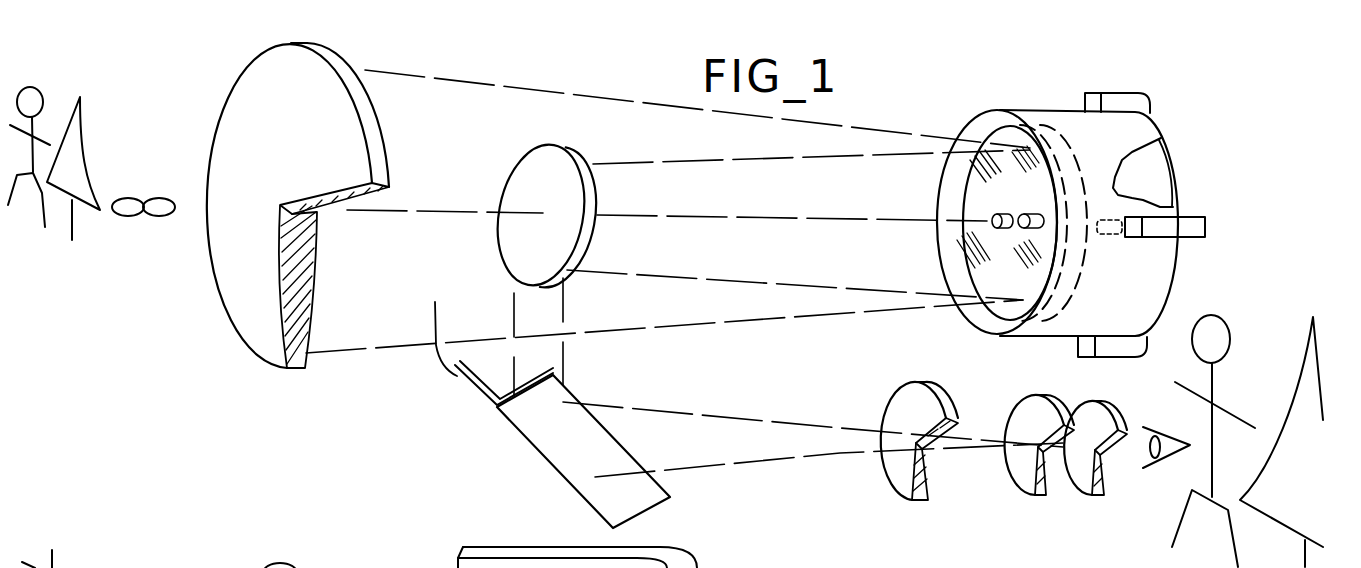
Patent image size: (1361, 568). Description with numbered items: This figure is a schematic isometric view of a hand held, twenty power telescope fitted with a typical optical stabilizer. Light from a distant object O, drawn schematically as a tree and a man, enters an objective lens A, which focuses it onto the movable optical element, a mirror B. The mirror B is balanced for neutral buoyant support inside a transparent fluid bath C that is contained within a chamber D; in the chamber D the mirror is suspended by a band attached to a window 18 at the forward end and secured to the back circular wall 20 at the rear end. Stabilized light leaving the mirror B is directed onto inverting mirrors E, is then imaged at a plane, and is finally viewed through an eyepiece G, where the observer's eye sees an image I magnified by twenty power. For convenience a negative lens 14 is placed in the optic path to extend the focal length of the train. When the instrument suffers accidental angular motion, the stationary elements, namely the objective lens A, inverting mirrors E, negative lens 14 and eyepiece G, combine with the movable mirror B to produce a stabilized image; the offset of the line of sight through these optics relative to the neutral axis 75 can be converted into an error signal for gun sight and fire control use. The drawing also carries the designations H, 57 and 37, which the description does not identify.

The distant object O is at (83, 137).
The objective lens A is at (237, 285).
The inverting mirrors E is at (510, 255).
The neutral axis 75 is at (732, 219).
The window 18 is at (980, 122).
The mirror B is at (1057, 320).
The fluid bath C is at (1144, 186).
The back circular wall 20 is at (1162, 182).
The chamber D is at (1175, 278).
The negative lens 14 is at (887, 400).
The eyepiece G is at (1062, 412).
The eye H is at (1173, 463).
The image I is at (1302, 372).
The box 57 is at (488, 550).
The element 37 is at (206, 564).